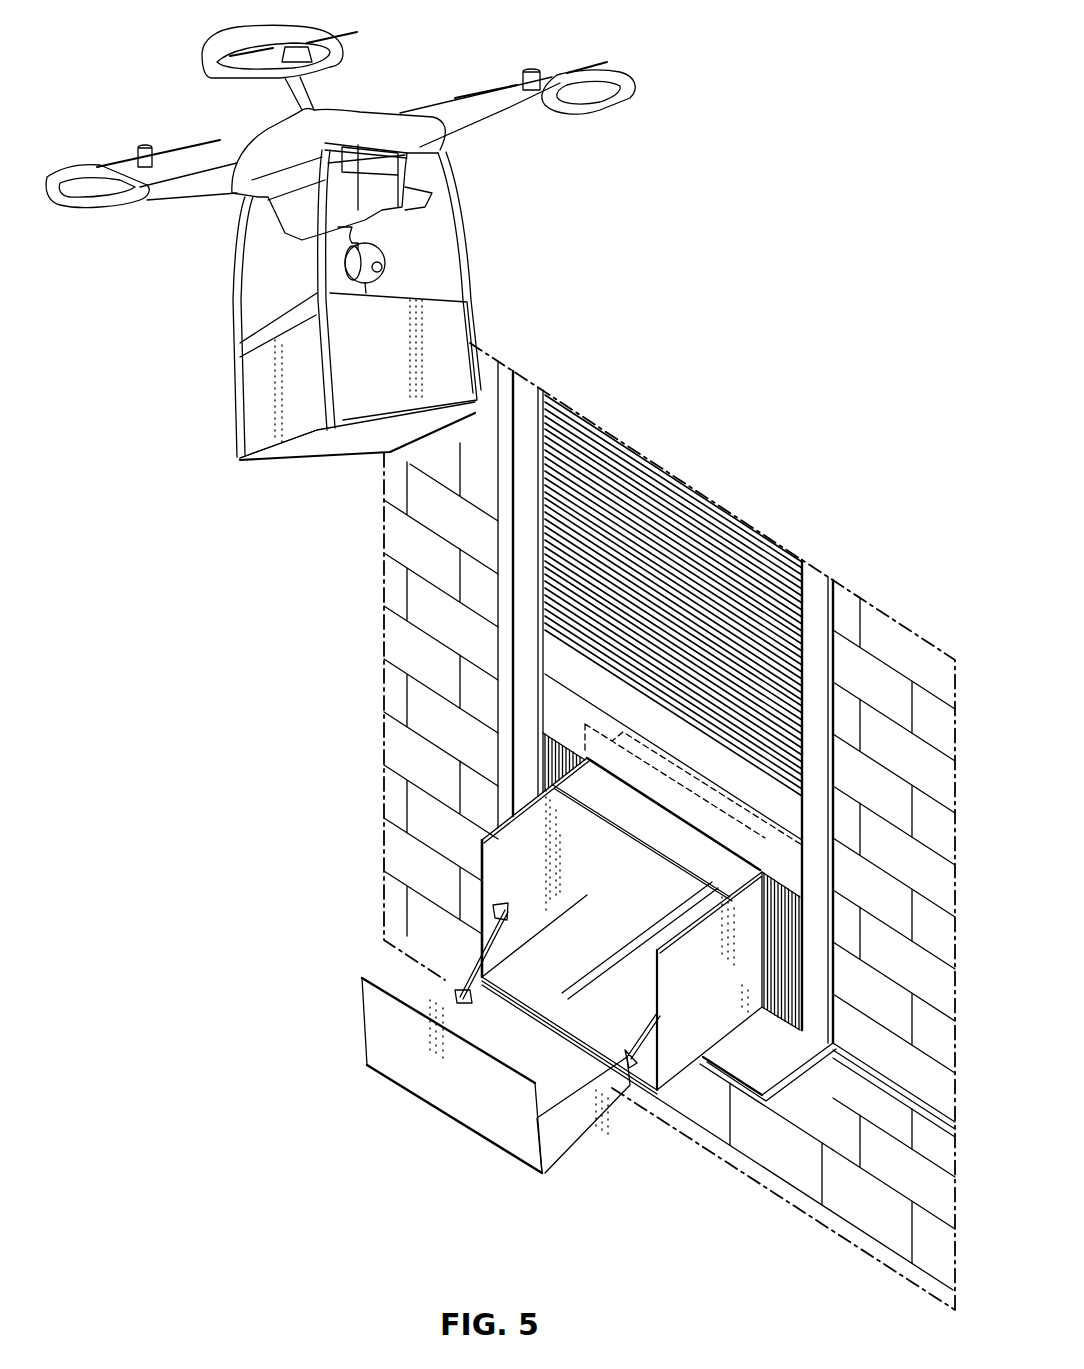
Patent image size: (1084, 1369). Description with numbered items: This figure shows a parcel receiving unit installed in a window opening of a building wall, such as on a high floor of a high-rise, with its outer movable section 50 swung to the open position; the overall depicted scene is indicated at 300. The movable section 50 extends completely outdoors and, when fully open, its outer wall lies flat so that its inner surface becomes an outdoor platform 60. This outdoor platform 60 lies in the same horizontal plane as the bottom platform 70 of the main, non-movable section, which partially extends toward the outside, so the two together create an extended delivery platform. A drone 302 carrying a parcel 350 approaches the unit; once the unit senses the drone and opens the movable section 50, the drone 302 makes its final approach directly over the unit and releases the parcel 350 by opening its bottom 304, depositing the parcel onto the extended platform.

The delivery system environment 300 is at (806, 46).
The drone 302 is at (232, 282).
The parcel 350 is at (257, 387).
The bottom 304 is at (338, 450).
The bottom platform 70 is at (583, 922).
The outdoor platform 60 is at (547, 1083).
The movable section 50 is at (360, 1043).